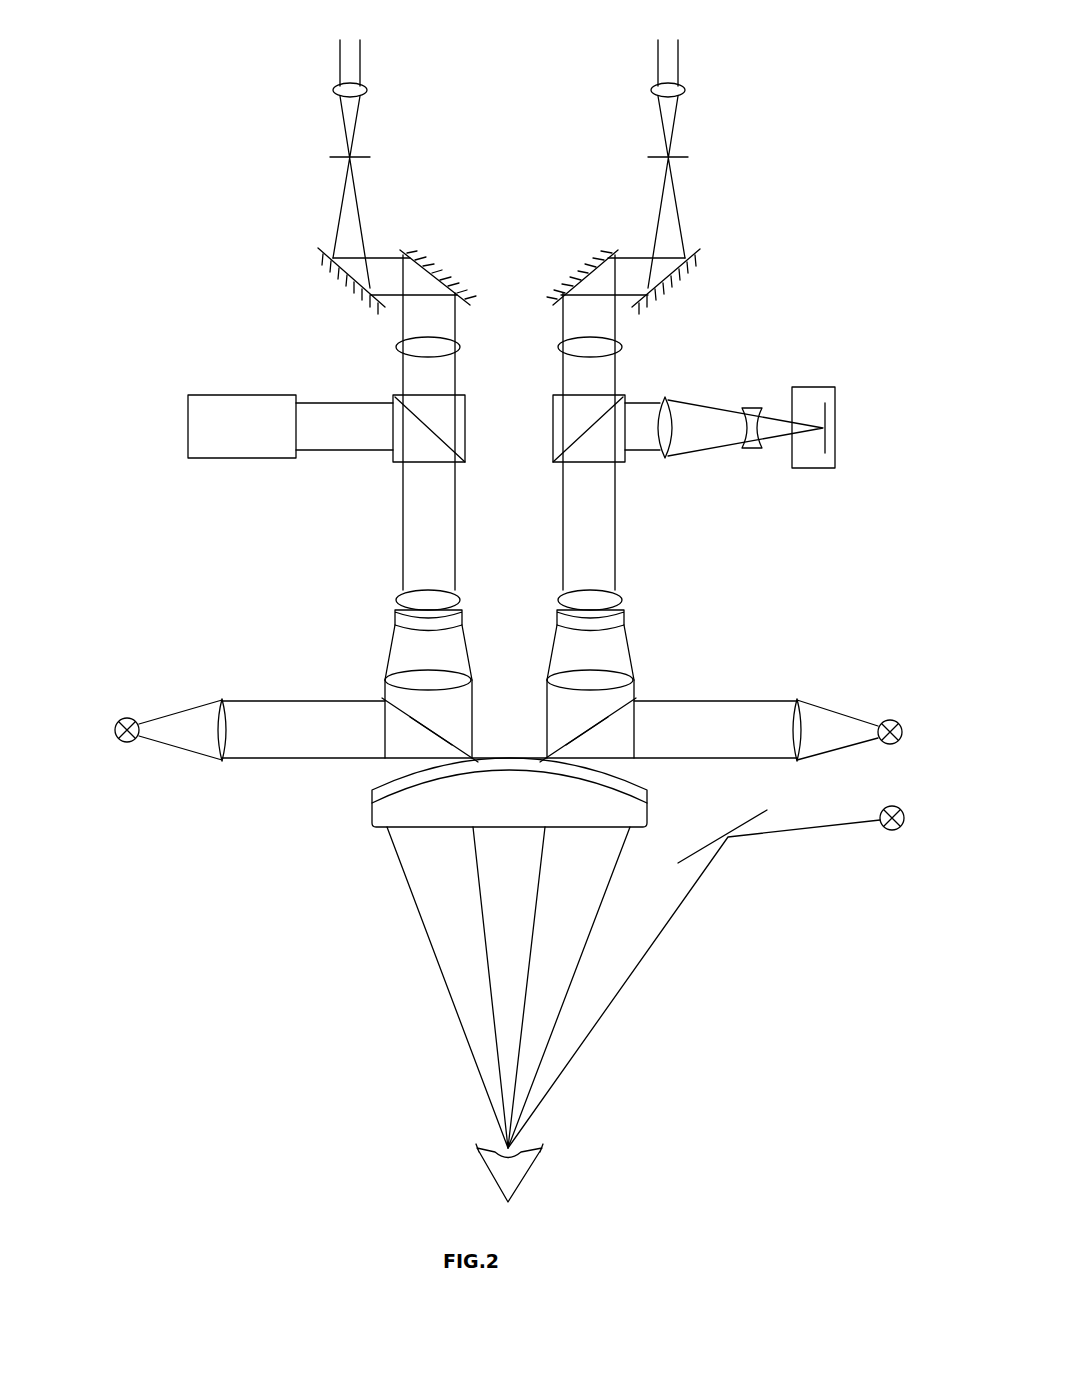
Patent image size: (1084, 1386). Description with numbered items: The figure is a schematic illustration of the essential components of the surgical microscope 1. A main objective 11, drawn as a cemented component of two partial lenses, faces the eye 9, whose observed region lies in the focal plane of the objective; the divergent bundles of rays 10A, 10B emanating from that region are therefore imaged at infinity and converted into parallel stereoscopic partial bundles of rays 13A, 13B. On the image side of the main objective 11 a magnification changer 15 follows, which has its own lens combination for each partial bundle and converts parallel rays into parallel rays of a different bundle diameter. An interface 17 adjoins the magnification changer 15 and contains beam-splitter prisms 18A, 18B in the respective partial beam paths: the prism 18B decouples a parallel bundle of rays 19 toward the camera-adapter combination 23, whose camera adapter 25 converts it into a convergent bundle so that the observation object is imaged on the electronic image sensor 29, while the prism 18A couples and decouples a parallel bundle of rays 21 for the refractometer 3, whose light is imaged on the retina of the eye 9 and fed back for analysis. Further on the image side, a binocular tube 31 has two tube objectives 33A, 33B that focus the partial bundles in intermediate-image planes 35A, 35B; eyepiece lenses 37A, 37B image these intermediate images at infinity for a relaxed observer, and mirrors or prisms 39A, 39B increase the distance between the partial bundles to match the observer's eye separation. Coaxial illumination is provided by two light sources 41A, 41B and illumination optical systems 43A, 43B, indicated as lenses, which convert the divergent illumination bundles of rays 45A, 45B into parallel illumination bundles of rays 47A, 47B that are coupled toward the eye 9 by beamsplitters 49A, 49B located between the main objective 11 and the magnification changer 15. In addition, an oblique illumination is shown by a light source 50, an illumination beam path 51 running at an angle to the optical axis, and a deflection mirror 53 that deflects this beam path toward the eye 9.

The surgical microscope 1 is at (817, 83).
The refractometer 3 is at (253, 452).
The eye 9 is at (526, 1172).
The observation bundle of rays 10A is at (420, 918).
The observation bundle of rays 10B is at (588, 920).
The main objective 11 is at (366, 760).
The stereoscopic partial bundle of rays 13A is at (388, 722).
The stereoscopic partial bundle of rays 13B is at (630, 722).
The magnification changer 15 is at (364, 593).
The interface 17 is at (180, 395).
The beam-splitter prism 18A is at (468, 444).
The beam-splitter prism 18B is at (552, 430).
The parallel bundle of rays 19 is at (640, 444).
The parallel bundle of rays 21 is at (345, 442).
The camera-adapter combination 23 is at (838, 471).
The camera adapter 25 is at (765, 392).
The electronic image sensor 29 is at (812, 386).
The binocular tube 31 is at (305, 75).
The tube objective 33A is at (396, 342).
The tube objective 33B is at (612, 342).
The intermediate-image plane 35A is at (364, 160).
The intermediate-image plane 35B is at (652, 160).
The eyepiece lens 37A is at (366, 86).
The eyepiece lens 37B is at (652, 86).
The system of mirrors or prisms 39A is at (410, 242).
The system of mirrors or prisms 39B is at (608, 242).
The light source 41A is at (116, 722).
The light source 41B is at (898, 742).
The illumination optical system 43A is at (226, 764).
The illumination optical system 43B is at (798, 764).
The illumination bundle of rays 45A is at (172, 706).
The illumination bundle of rays 45B is at (844, 706).
The illumination bundle of rays 47A is at (307, 700).
The illumination bundle of rays 47B is at (742, 700).
The beamsplitter 49A is at (447, 740).
The beamsplitter 49B is at (564, 752).
The light source 50 is at (896, 828).
The illumination beam path 51 is at (622, 994).
The deflection mirror 53 is at (738, 830).